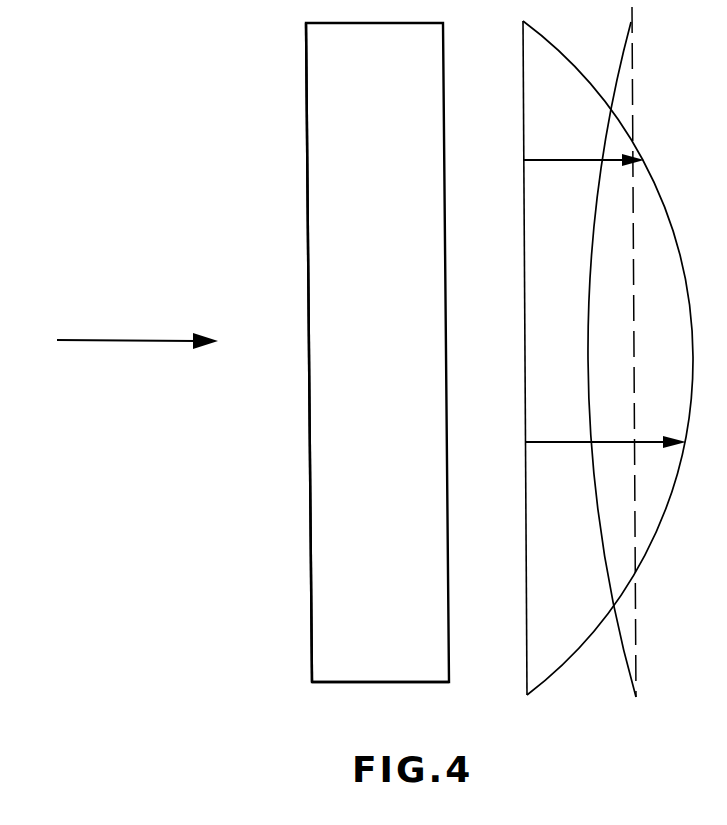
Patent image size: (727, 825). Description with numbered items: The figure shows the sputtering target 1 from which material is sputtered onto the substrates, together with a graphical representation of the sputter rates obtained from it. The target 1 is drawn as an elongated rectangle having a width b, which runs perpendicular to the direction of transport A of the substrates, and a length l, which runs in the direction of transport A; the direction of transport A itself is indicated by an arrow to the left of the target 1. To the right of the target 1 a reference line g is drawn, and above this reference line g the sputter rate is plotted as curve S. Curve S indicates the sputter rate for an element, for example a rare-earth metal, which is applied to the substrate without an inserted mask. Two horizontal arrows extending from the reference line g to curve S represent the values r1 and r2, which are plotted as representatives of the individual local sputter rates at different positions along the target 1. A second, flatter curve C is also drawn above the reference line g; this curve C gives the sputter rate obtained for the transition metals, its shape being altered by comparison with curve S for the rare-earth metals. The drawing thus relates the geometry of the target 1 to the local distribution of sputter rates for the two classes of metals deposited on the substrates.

The target 1 is at (332, 172).
The width b is at (309, 398).
The length l is at (405, 683).
The direction of transport A is at (137, 327).
The reference line g is at (525, 663).
The curve S is at (665, 210).
The curve C is at (618, 637).
The sputter rate value r2 is at (578, 162).
The sputter rate value r1 is at (573, 444).